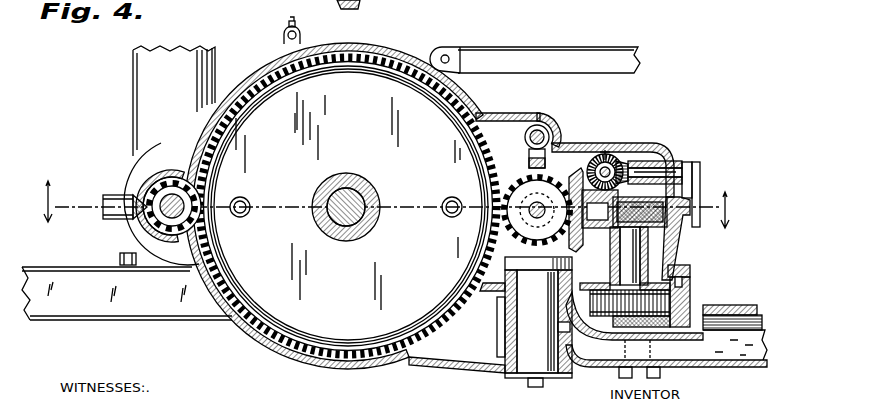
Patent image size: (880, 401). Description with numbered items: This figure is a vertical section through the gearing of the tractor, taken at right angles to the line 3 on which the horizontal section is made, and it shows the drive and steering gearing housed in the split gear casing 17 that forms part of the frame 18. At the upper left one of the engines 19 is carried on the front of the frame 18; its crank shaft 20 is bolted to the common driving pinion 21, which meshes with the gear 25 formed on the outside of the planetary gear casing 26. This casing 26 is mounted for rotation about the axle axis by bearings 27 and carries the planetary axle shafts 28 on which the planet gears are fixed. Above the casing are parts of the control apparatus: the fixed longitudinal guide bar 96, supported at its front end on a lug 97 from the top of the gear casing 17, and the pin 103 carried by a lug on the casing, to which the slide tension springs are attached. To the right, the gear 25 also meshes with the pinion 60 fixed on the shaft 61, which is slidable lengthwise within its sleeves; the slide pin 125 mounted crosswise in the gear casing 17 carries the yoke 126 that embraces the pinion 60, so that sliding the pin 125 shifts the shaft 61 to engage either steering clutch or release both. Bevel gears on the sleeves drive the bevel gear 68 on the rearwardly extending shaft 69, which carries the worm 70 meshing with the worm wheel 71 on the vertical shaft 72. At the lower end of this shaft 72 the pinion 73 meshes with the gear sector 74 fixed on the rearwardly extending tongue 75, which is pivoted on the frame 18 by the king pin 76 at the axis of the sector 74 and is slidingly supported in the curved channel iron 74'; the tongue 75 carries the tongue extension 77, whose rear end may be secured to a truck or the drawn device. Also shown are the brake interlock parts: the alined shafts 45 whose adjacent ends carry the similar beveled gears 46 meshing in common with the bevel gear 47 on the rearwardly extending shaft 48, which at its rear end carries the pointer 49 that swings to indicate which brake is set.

The section line 3— 3 is at (388, 204).
The split gear casing 17 is at (390, 45).
The frame 18 is at (173, 308).
The engine 19 is at (169, 155).
The crank shaft 20 is at (147, 223).
The driving pinion 21 is at (147, 212).
The gear 25 is at (330, 355).
The planetary gear casing 26 is at (452, 133).
The bearing 27 is at (372, 188).
The planetary axle shaft 28 is at (448, 220).
The shaft 45 is at (612, 157).
The beveled gear 46 is at (622, 160).
The bevel gear 47 is at (650, 146).
The rearwardly extending shaft 48 is at (684, 163).
The pointer 49 is at (702, 185).
The pinion 60 is at (568, 143).
The shaft 61 is at (533, 220).
The bevel gear 68 is at (602, 156).
The rearwardly extending shaft 69 is at (600, 228).
The worm 70 is at (612, 250).
The worm wheel 71 is at (676, 228).
The vertical shaft 72 is at (636, 265).
The pinion 73 is at (605, 348).
The gear sector 74 is at (669, 291).
The curved channel iron 74' is at (682, 284).
The tongue 75 is at (687, 353).
The king pin 76 is at (490, 322).
The tongue extension 77 is at (742, 347).
The guide bar 96 is at (555, 53).
The lug 97 is at (443, 45).
The pin 103 is at (284, 40).
The slide pin 125 is at (543, 126).
The yoke 126 is at (529, 152).